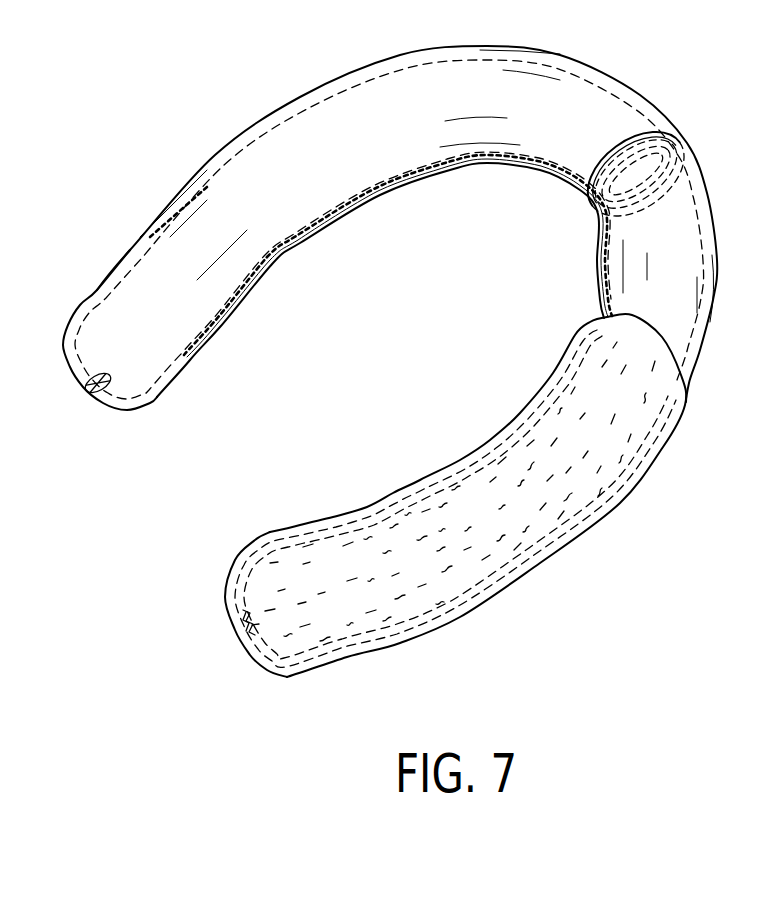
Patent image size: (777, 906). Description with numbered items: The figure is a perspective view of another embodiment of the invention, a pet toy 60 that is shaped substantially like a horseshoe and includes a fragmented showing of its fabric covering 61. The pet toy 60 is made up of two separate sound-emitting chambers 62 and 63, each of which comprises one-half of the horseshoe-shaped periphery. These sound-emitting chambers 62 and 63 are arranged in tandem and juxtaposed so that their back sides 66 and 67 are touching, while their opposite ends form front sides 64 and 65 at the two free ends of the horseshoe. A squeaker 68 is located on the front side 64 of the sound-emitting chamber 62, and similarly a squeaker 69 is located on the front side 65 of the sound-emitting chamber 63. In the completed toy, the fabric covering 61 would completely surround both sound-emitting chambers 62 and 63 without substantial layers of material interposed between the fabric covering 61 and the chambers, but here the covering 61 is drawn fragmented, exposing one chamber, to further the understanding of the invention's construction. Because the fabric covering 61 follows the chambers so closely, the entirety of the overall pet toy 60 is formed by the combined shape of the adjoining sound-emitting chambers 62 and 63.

The pet toy 60 is at (688, 143).
The fabric covering 61 is at (528, 555).
The sound-emitting chamber 62 is at (303, 118).
The sound-emitting chamber 63 is at (700, 234).
The front side 64 is at (156, 398).
The front side 65 is at (280, 648).
The back side 66 is at (616, 150).
The back side 67 is at (660, 207).
The squeaker 68 is at (99, 395).
The squeaker 69 is at (242, 633).